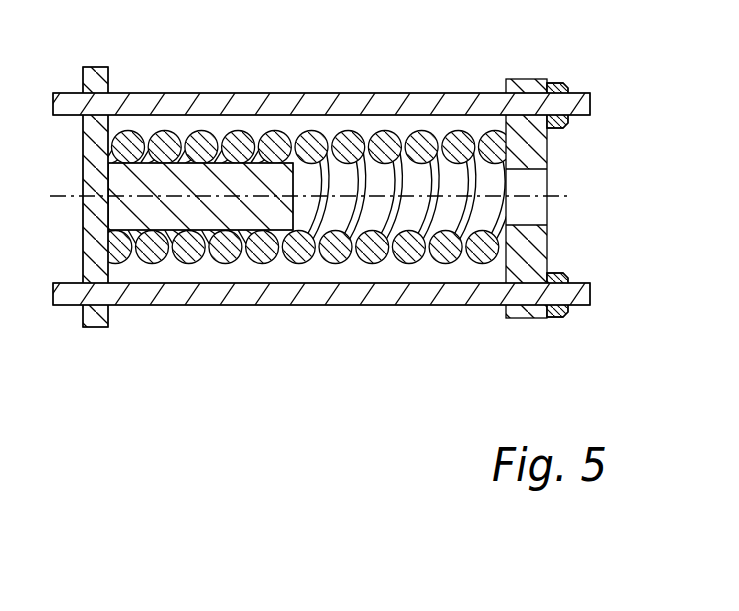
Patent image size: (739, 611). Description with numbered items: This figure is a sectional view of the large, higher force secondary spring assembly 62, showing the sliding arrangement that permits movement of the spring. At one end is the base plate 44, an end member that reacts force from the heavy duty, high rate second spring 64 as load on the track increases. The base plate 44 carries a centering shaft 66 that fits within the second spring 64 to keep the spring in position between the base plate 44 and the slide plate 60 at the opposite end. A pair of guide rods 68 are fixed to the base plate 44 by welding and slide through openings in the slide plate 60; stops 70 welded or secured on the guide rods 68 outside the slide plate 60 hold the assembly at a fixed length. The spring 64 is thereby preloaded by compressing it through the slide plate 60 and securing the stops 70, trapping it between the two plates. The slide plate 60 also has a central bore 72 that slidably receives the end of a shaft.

The base plate 44 is at (108, 80).
The slide plate 60 is at (536, 146).
The spring assembly 62 is at (332, 324).
The second spring 64 is at (407, 246).
The centering shaft 66 is at (225, 197).
The guide rods 68 is at (365, 102).
The stops 70 is at (560, 83).
The central bore 72 is at (528, 212).